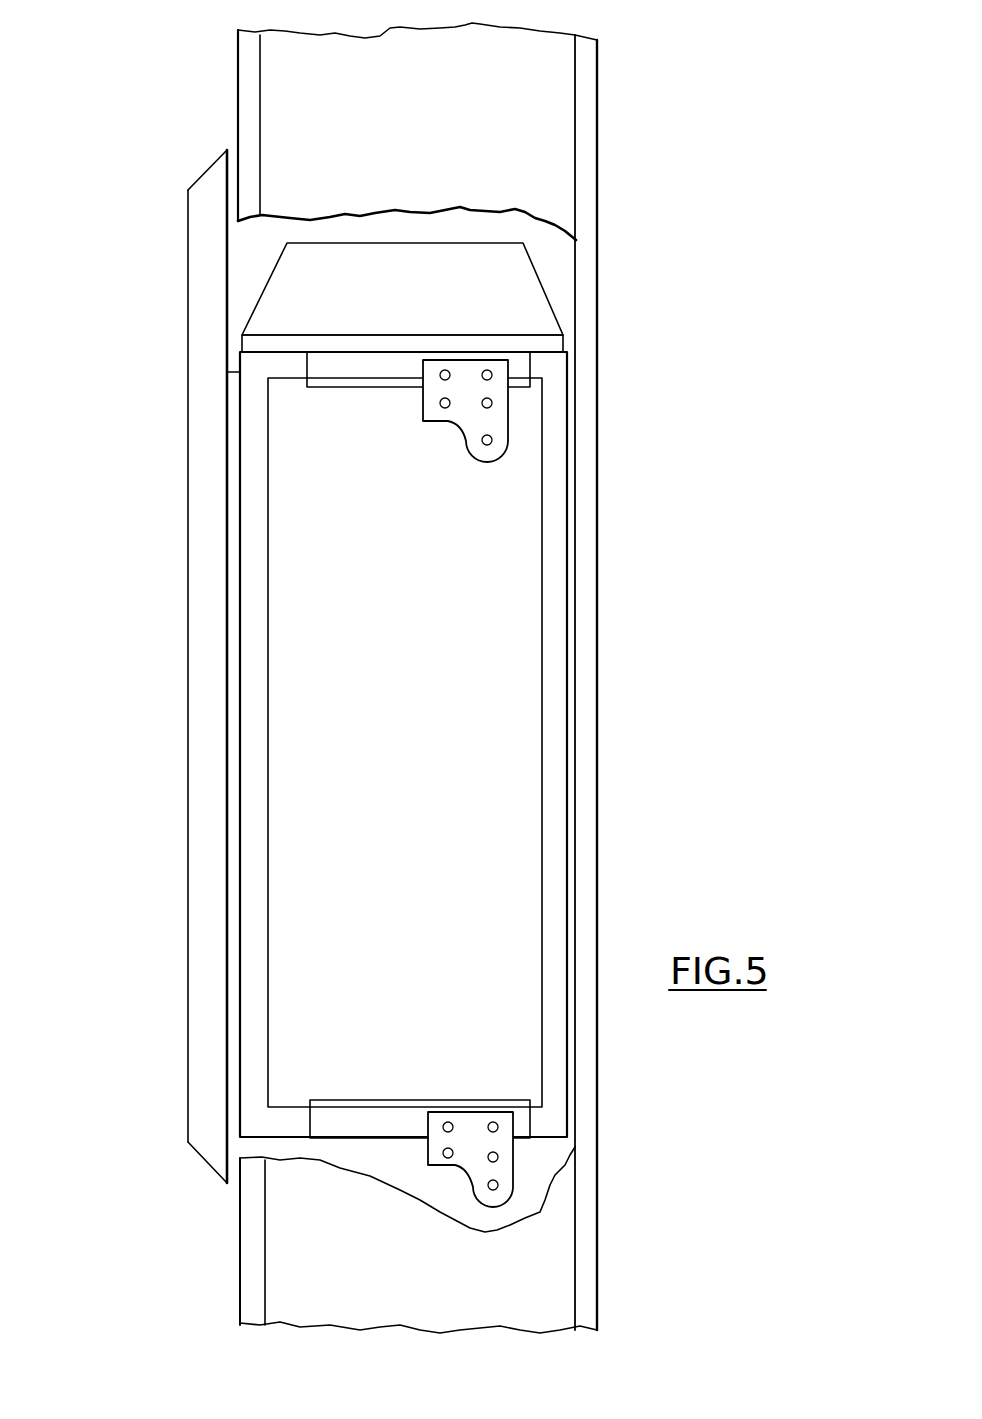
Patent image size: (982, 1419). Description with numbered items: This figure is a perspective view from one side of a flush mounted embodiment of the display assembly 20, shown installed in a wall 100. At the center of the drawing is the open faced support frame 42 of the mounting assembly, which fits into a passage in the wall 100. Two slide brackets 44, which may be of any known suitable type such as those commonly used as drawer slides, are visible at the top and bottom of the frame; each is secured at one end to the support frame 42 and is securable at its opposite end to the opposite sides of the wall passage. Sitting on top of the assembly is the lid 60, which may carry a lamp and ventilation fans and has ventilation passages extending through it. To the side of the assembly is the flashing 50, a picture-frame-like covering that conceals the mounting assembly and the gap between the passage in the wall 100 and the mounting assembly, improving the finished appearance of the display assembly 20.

The display assembly 20 is at (140, 789).
The support frame 42 is at (253, 723).
The slide brackets 44 is at (377, 373).
The flashing 50 is at (205, 577).
The lid 60 is at (517, 320).
The wall 100 is at (242, 1240).